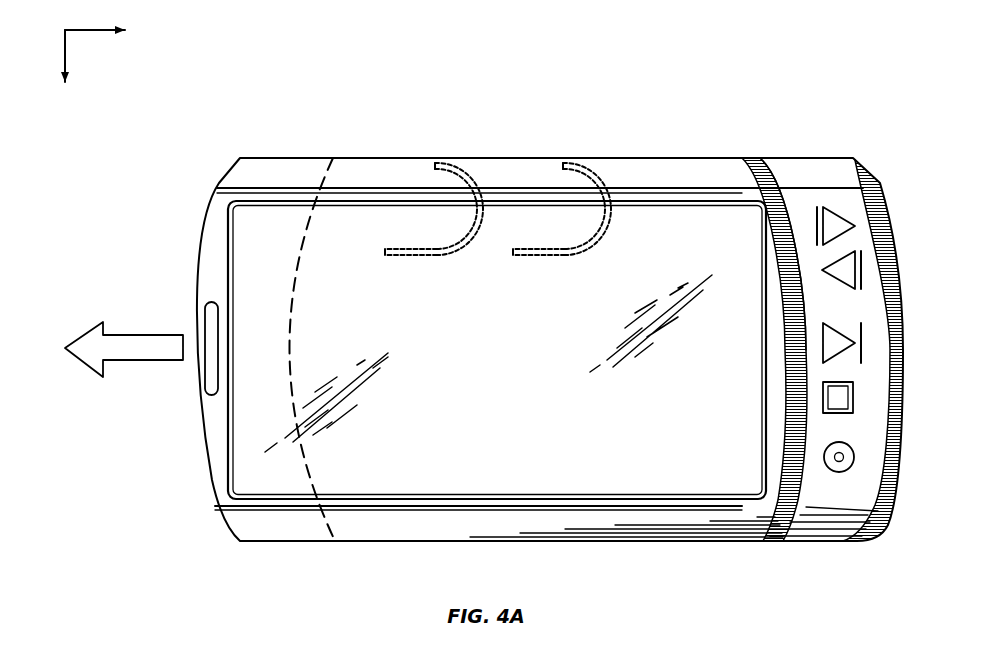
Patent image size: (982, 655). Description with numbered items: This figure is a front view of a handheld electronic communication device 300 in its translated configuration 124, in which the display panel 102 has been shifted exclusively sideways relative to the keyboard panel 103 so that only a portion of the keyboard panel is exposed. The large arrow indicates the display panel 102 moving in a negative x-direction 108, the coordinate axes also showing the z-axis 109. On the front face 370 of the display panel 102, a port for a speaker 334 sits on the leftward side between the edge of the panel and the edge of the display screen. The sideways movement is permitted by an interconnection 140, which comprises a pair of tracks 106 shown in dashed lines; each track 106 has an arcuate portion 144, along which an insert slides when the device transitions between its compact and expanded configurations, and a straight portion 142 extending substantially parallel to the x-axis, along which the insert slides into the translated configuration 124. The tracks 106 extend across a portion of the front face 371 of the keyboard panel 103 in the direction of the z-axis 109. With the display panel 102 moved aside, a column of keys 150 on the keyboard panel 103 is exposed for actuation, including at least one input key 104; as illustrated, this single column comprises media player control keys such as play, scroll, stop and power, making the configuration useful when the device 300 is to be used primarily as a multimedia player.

The display panel 102 is at (283, 177).
The keyboard panel 103 is at (830, 497).
The input key 104 is at (833, 212).
The track 106 is at (526, 202).
The negative x-direction 108 is at (167, 33).
The z-axis 109 is at (86, 108).
The translated configuration 124 is at (824, 109).
The interconnection 140 is at (496, 88).
The straight portion 142 is at (398, 258).
The arcuate portion 144 is at (484, 214).
The column of keys 150 is at (871, 337).
The handheld electronic communication device 300 is at (729, 72).
The speaker 334 is at (210, 320).
The front face 370 is at (690, 174).
The front face 371 is at (805, 204).